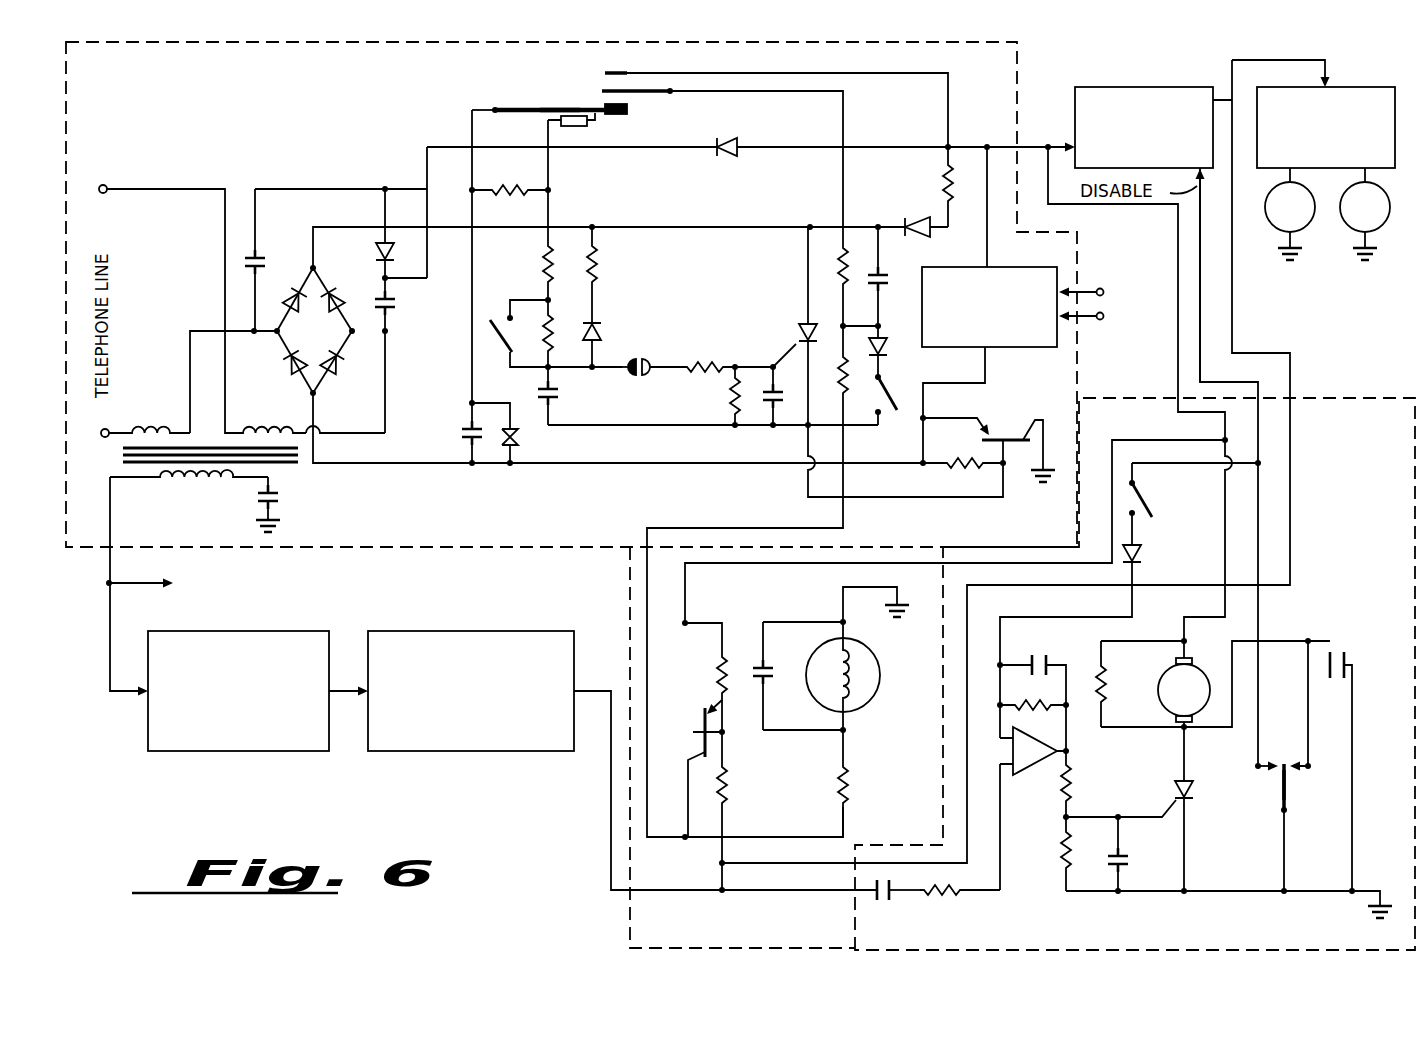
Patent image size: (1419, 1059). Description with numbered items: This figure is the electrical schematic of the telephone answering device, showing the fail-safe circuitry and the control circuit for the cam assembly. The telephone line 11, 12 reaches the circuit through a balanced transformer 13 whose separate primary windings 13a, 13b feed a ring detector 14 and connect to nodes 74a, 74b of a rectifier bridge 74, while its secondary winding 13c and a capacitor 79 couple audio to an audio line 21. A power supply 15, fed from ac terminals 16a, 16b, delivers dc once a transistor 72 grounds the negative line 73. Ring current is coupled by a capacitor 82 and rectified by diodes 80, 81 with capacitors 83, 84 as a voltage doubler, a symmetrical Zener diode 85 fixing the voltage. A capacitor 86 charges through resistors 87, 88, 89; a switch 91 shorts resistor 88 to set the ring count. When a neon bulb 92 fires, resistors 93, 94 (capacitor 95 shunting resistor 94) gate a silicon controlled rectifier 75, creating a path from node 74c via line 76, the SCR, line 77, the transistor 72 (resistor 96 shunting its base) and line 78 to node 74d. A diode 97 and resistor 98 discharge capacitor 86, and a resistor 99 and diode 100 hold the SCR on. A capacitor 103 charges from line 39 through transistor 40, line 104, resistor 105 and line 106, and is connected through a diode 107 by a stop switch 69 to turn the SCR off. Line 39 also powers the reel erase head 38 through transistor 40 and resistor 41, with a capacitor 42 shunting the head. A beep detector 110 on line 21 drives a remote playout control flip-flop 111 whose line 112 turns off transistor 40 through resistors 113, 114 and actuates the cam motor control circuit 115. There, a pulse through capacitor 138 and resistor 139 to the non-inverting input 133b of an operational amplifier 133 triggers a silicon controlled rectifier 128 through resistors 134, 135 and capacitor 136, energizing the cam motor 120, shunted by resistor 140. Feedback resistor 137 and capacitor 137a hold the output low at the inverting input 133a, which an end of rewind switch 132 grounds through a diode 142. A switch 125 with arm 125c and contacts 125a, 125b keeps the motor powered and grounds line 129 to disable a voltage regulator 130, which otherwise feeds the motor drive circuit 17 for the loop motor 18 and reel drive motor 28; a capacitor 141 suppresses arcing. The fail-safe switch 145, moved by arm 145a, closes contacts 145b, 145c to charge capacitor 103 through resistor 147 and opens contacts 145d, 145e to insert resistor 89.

The telephone line 11 is at (107, 192).
The telephone line 12 is at (109, 429).
The balanced transformer 13 is at (113, 460).
The primary winding 13a is at (266, 428).
The primary winding 13b is at (151, 426).
The secondary winding 13c is at (196, 483).
The ring detector 14 is at (571, 294).
The power supply 15 is at (961, 276).
The terminal 16a is at (1101, 321).
The terminal 16b is at (1101, 288).
The motor drive circuit 17 is at (1372, 87).
The loop motor 18 is at (1348, 243).
The audio line 21 is at (124, 583).
The reel drive motor 28 is at (1272, 243).
The reel erase head 38 is at (871, 678).
The line 39 is at (994, 144).
The transistor 40 is at (690, 731).
The resistor 41 is at (851, 779).
The capacitor 42 is at (768, 665).
The stop switch 69 is at (900, 403).
The transistor 72 is at (1010, 432).
The negative line 73 is at (987, 377).
The rectifier bridge 74 is at (301, 318).
The bridge node 74a is at (354, 336).
The bridge node 74b is at (275, 340).
The bridge node 74c is at (310, 266).
The bridge node 74d is at (311, 394).
The silicon controlled rectifier 75 is at (800, 321).
The line 76 is at (712, 226).
The line 77 is at (803, 446).
The line 78 is at (541, 468).
The capacitor 79 is at (276, 490).
The diode 80 is at (375, 257).
The diode 81 is at (725, 140).
The capacitor 82 is at (250, 258).
The capacitor 83 is at (391, 318).
The capacitor 84 is at (468, 418).
The symmetrical Zener diode 85 is at (516, 445).
The capacitor 86 is at (558, 397).
The resistor 87 is at (542, 262).
The resistor 88 is at (543, 350).
The resistor 89 is at (512, 186).
The switch 91 is at (494, 345).
The neon bulb 92 is at (647, 362).
The resistor 93 is at (708, 360).
The resistor 94 is at (730, 398).
The capacitor 95 is at (769, 388).
The resistor 96 is at (976, 470).
The diode 97 is at (602, 329).
The resistor 98 is at (598, 262).
The resistor 99 is at (943, 178).
The diode 100 is at (913, 220).
The capacitor 103 is at (881, 274).
The line 104 is at (758, 525).
The resistor 105 is at (846, 396).
The line 106 is at (879, 325).
The diode 107 is at (888, 347).
The beep detector 110 is at (296, 640).
The remote playout control flip-flop 111 is at (559, 640).
The line 112 is at (612, 797).
The resistor 113 is at (729, 690).
The resistor 114 is at (727, 782).
The cam motor control circuit 115 is at (1135, 674).
The cam motor 120 is at (1212, 666).
The switch 125 is at (1267, 794).
The switch contact 125a is at (1310, 770).
The switch contact 125b is at (1255, 766).
The switch arm 125c is at (1287, 811).
The silicon controlled rectifier 128 is at (1172, 791).
The line 129 is at (1262, 554).
The voltage regulator 130 is at (1146, 93).
The end of rewind switch 132 is at (1140, 503).
The operational amplifier 133 is at (1031, 772).
The inverting input terminal 133a is at (1000, 738).
The non-inverting input 133b is at (1000, 764).
The resistor 134 is at (1072, 776).
The resistor 135 is at (1062, 863).
The capacitor 136 is at (1125, 876).
The feedback resistor 137 is at (1005, 700).
The capacitor 137a is at (1048, 659).
The capacitor 138 is at (884, 898).
The resistor 139 is at (950, 896).
The resistor 140 is at (1106, 681).
The capacitor 141 is at (1352, 642).
The diode 142 is at (1141, 557).
The switch 145 is at (631, 118).
The switch arm 145a is at (618, 118).
The contact 145b is at (622, 88).
The contact 145c is at (608, 72).
The contact 145d is at (572, 106).
The contact 145e is at (576, 128).
The resistor 147 is at (835, 272).